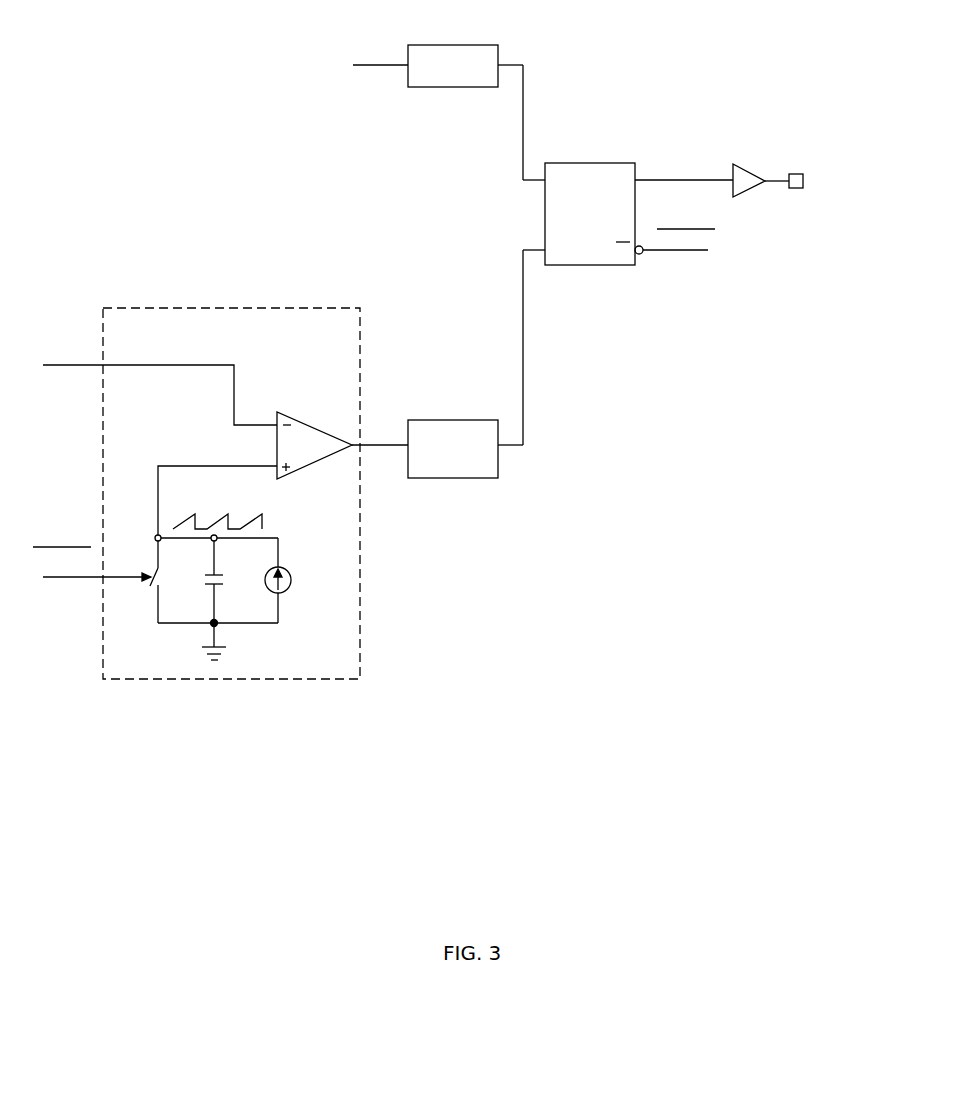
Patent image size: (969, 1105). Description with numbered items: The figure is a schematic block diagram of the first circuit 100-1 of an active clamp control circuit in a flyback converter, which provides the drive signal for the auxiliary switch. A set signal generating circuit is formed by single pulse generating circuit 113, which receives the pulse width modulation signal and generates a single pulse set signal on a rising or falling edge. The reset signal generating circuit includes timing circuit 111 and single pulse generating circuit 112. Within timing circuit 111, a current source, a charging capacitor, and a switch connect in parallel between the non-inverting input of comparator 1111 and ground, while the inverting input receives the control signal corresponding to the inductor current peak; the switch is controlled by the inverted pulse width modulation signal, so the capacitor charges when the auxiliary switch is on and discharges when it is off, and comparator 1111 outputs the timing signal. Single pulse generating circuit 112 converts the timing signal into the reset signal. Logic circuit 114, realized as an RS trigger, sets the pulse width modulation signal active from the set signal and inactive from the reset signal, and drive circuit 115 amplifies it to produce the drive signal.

The first circuit 100-1 is at (716, 656).
The timing circuit 111 is at (365, 625).
The comparator 1111 is at (328, 430).
The single pulse generating circuit 112 is at (437, 420).
The single pulse generating circuit 113 is at (455, 88).
The logic circuit 114 is at (601, 163).
The drive circuit 115 is at (757, 166).